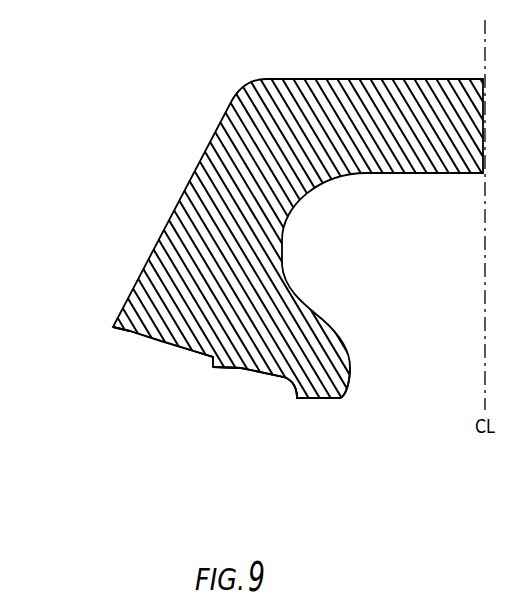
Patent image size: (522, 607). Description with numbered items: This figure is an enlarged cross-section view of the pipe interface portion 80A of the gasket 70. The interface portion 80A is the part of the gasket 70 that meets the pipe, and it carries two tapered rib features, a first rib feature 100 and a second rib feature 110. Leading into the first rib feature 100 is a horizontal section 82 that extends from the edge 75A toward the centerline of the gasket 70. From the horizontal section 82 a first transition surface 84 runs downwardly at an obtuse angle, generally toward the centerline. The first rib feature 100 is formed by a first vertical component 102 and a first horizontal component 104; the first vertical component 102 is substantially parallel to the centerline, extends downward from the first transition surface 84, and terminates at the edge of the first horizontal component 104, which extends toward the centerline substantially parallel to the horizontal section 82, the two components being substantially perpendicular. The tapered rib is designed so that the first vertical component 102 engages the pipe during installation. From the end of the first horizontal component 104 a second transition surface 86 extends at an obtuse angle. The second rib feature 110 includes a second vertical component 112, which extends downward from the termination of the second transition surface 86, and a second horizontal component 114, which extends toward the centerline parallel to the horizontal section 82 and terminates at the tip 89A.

The gasket 70 is at (85, 107).
The edge 75A is at (113, 331).
The horizontal section 82 is at (130, 334).
The first transition surface 84 is at (183, 347).
The first vertical component 102 is at (210, 358).
The first rib feature 100 is at (200, 394).
The first horizontal component 104 is at (240, 369).
The second transition surface 86 is at (272, 377).
The second vertical component 112 is at (288, 397).
The second horizontal component 114 is at (323, 398).
The tip 89A is at (340, 400).
The second rib feature 110 is at (312, 457).
The pipe interface portion 80A is at (93, 475).